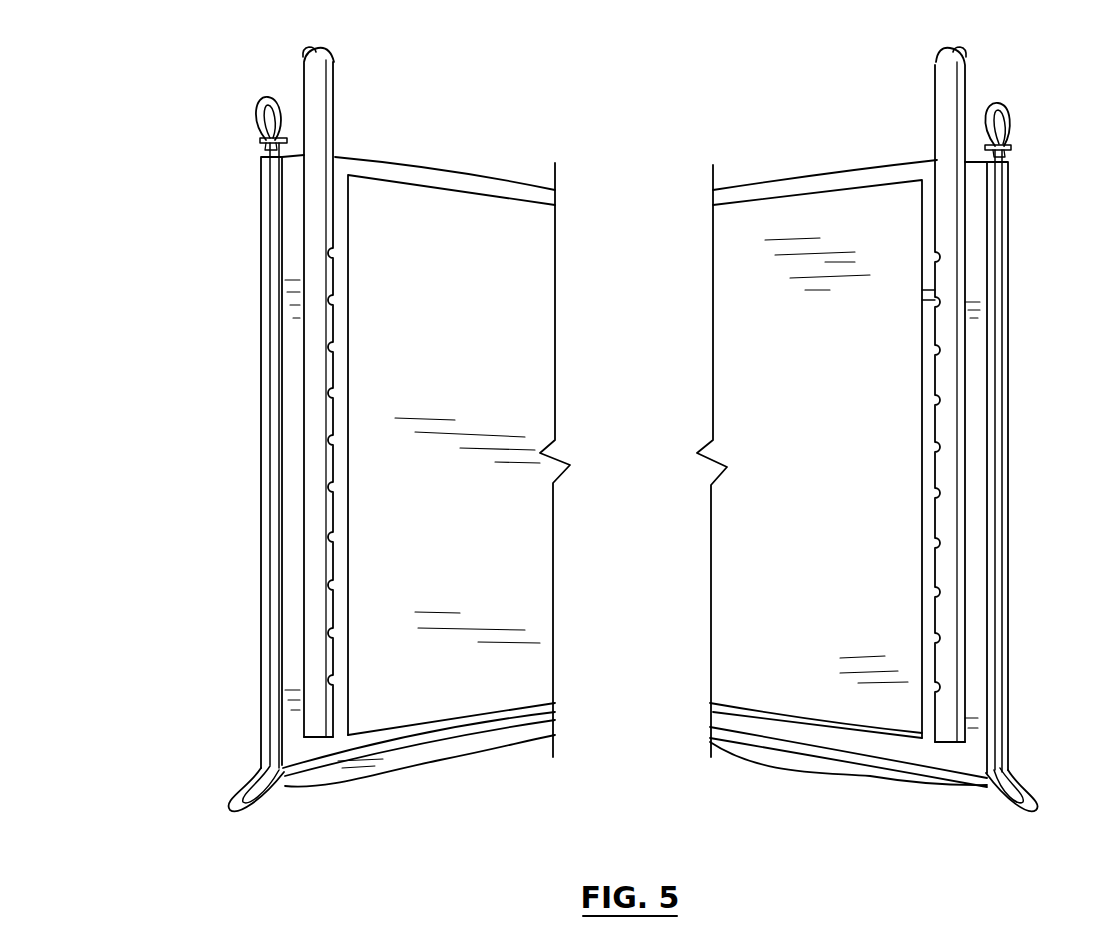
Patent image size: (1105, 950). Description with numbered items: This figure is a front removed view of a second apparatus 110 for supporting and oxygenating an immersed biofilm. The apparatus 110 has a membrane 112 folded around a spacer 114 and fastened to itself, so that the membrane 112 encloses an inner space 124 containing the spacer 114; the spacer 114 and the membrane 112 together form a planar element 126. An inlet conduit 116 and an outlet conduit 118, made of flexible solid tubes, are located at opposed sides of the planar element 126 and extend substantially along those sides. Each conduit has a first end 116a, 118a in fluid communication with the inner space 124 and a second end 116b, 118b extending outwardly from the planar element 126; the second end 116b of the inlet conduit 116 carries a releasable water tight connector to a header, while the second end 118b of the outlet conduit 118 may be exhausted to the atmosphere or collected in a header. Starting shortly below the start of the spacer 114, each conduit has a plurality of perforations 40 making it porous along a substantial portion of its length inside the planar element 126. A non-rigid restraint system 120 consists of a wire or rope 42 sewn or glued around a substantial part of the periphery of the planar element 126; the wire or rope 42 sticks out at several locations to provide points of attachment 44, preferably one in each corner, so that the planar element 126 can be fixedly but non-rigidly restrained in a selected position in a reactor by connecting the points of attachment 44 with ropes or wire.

The second apparatus 110 is at (449, 846).
The membrane 112 is at (365, 170).
The spacer 114 is at (478, 389).
The inner space 124 is at (504, 547).
The inlet conduit 116 is at (317, 335).
The first end of the inlet conduit 116a is at (315, 664).
The second end of the inlet conduit 116b is at (335, 66).
The outlet conduit 118 is at (953, 383).
The first end of the outlet conduit 118a is at (952, 666).
The second end of the outlet conduit 118b is at (937, 83).
The perforations 40 is at (329, 301).
The wire or rope 42 is at (992, 334).
The points of attachment 44 is at (263, 97).
The restraint system 120 is at (257, 118).
The planar element 126 is at (245, 506).